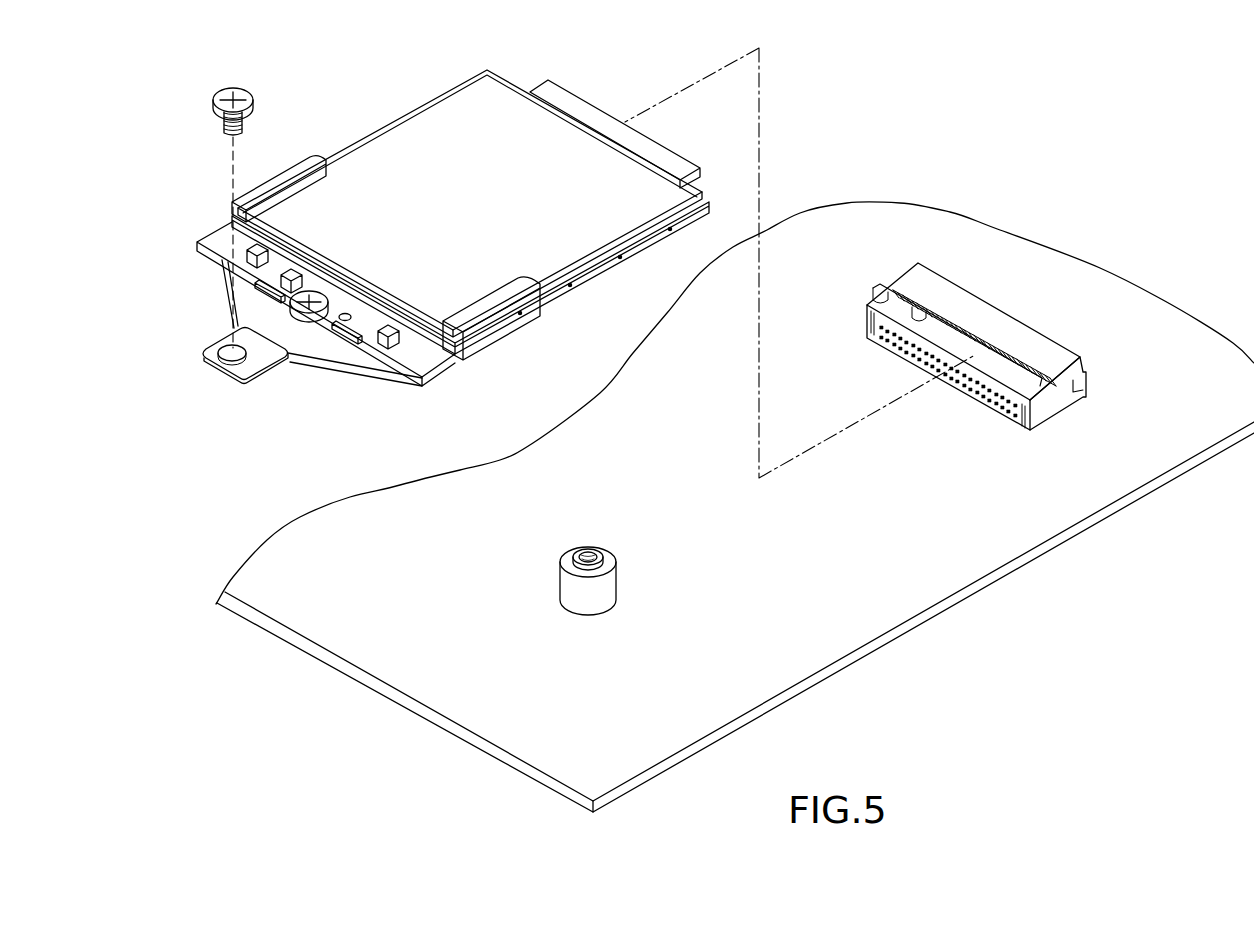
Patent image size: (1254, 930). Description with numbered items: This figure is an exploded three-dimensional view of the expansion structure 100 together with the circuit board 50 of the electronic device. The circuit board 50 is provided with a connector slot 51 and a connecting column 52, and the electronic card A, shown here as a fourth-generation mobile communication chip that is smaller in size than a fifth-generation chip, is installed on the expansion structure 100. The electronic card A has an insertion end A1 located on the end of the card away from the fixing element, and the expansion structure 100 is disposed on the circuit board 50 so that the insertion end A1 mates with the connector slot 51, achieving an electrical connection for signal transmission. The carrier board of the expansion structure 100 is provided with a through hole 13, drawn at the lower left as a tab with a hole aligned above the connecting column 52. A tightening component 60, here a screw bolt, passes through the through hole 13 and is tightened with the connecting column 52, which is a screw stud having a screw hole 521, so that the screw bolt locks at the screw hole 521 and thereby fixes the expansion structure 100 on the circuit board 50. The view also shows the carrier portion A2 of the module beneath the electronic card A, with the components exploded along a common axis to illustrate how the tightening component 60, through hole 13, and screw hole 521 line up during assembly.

The circuit board 50 is at (920, 568).
The connector slot 51 is at (997, 325).
The connecting column 52 is at (453, 601).
The screw hole 521 is at (578, 548).
The tightening component 60 is at (225, 92).
The expansion structure 100 is at (246, 349).
The through hole 13 is at (205, 358).
The electronic card A is at (413, 202).
The insertion end A1 is at (575, 105).
The module carrier board A2 is at (217, 242).